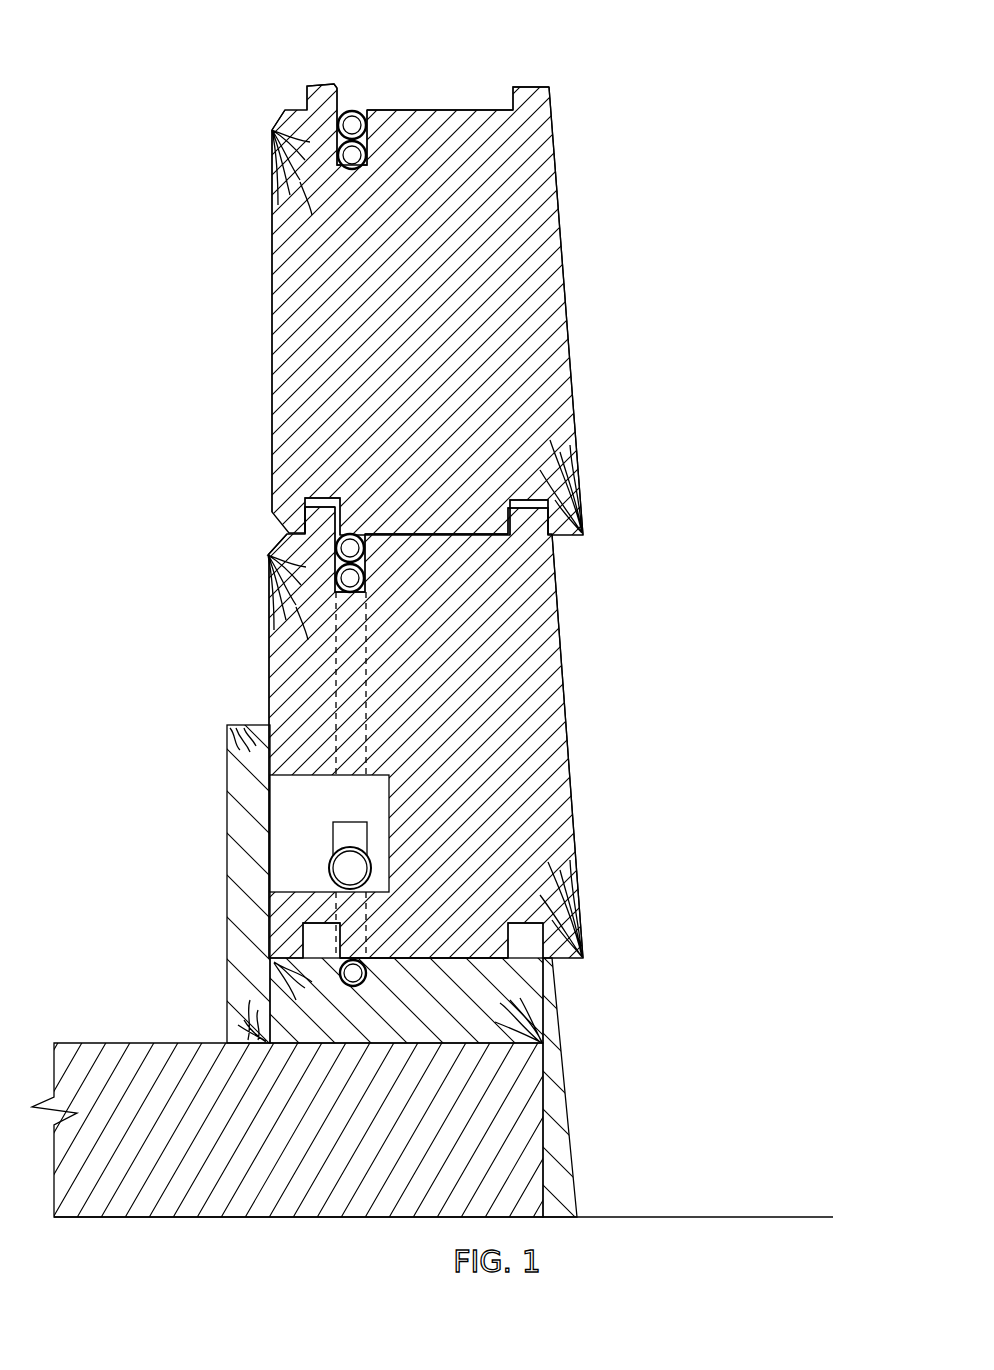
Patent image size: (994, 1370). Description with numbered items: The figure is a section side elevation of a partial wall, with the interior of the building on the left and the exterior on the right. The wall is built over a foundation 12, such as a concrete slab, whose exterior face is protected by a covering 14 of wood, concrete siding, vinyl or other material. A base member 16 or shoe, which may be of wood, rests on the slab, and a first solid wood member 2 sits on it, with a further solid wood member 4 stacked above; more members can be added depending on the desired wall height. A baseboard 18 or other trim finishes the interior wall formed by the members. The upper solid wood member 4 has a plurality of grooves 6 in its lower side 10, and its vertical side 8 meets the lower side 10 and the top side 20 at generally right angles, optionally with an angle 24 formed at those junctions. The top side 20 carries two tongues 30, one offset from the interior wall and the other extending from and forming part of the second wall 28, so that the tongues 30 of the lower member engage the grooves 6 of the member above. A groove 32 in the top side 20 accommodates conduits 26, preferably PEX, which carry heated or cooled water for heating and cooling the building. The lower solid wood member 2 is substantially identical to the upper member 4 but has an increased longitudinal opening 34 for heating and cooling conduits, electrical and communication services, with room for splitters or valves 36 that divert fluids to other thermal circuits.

The first solid wood member 2 is at (543, 692).
The solid wood member 4 is at (550, 210).
The grooves 6 is at (322, 500).
The vertical side 8 is at (270, 378).
The lower side 10 is at (438, 527).
The foundation 12 is at (130, 1060).
The covering 14 is at (560, 1112).
The base member 16 is at (517, 988).
The baseboard 18 is at (227, 828).
The top side 20 is at (385, 110).
The angle 24 is at (280, 128).
The conduits 26 is at (366, 156).
The second wall 28 is at (557, 147).
The tongues 30 is at (313, 83).
The groove 32 is at (354, 169).
The longitudinal opening 34 is at (315, 810).
The splitters or valves 36 is at (350, 835).